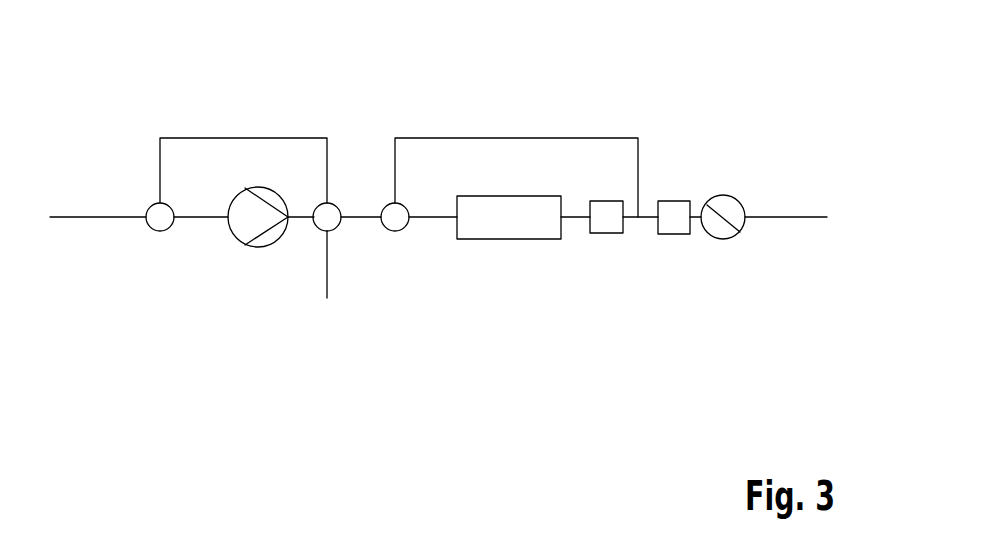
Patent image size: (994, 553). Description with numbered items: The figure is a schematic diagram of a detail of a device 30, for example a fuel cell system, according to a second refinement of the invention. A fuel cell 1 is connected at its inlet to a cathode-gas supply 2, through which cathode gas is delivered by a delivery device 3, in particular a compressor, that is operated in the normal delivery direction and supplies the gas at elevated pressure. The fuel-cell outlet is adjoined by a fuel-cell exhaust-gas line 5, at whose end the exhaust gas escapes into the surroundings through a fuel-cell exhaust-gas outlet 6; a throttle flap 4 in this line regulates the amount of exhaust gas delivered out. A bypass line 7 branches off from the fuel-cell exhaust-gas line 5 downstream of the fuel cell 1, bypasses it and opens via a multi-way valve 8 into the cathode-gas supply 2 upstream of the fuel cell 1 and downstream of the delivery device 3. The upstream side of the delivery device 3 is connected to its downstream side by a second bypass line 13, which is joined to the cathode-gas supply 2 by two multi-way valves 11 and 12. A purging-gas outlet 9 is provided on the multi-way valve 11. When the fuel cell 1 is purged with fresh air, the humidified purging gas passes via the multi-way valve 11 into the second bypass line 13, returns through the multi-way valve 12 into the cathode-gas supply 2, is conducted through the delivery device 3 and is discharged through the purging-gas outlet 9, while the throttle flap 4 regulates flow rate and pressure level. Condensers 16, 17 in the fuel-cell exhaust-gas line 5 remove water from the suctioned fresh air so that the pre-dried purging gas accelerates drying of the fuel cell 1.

The device 30 is at (733, 52).
The fuel cell 1 is at (500, 240).
The cathode-gas supply 2 is at (363, 218).
The delivery device 3 is at (260, 247).
The throttle flap 4 is at (723, 239).
The fuel-cell exhaust-gas line 5 is at (778, 218).
The fuel-cell exhaust-gas outlet 6 is at (827, 217).
The bypass line 7 is at (477, 138).
The multi-way valve 8 is at (402, 230).
The purging-gas outlet 9 is at (318, 266).
The multi-way valve 11 is at (340, 204).
The multi-way valve 12 is at (152, 205).
The second bypass line 13 is at (233, 138).
The condenser 16 is at (674, 234).
The condenser 17 is at (608, 233).